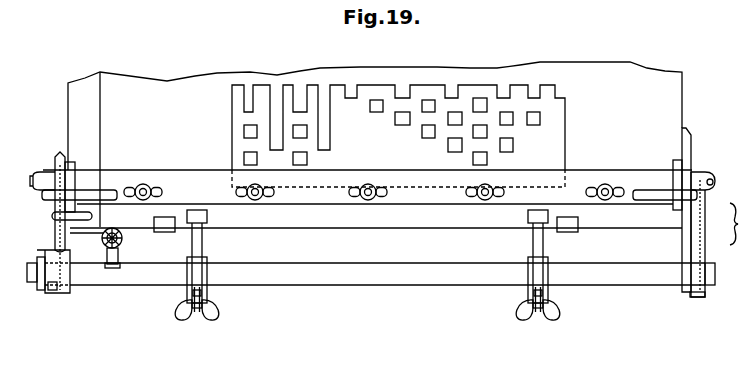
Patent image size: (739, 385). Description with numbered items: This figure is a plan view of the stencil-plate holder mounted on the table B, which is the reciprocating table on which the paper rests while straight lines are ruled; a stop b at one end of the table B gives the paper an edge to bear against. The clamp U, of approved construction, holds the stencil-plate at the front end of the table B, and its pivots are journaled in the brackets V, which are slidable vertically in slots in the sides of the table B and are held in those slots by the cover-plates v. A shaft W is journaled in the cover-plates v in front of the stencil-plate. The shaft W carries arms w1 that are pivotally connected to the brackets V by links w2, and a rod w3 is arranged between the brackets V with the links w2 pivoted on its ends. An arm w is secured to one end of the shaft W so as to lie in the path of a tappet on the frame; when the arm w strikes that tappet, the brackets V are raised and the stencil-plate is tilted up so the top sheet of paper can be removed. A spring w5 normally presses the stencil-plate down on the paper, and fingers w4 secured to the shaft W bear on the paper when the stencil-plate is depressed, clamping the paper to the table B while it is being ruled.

The table B is at (375, 144).
The clamp U is at (566, 183).
The brackets V is at (67, 165).
The arm w is at (38, 297).
The arms w1 is at (98, 196).
The links w2 is at (55, 241).
The rod w3 is at (52, 215).
The fingers w4 is at (203, 292).
The spring w5 is at (122, 240).
The shaft W is at (597, 278).
The cover-plates v is at (65, 266).
The stop b is at (165, 232).